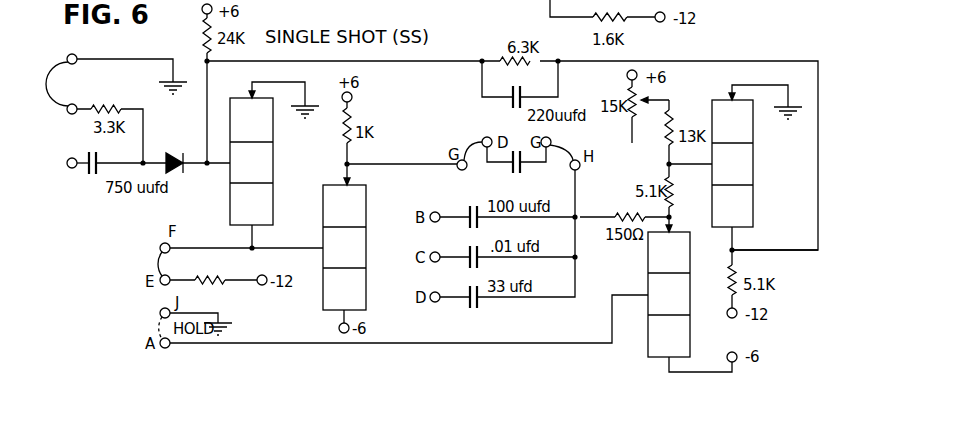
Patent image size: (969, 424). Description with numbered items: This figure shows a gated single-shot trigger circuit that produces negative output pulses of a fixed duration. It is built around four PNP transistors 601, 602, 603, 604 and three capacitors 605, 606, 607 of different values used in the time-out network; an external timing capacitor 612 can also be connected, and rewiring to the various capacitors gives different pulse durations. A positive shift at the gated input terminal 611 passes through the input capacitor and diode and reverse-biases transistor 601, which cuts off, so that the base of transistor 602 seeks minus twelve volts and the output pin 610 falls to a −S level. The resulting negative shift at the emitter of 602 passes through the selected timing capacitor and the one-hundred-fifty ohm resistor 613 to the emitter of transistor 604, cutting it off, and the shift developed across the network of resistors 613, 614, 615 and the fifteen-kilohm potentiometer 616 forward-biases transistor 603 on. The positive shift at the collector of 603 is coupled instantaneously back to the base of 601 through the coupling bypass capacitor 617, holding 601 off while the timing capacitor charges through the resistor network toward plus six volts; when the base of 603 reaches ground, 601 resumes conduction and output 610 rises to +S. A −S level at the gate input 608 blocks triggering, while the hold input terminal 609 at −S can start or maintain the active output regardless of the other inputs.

The PNP transistor 601 is at (274, 152).
The PNP transistor 602 is at (366, 255).
The PNP transistor 603 is at (754, 170).
The PNP transistor 604 is at (647, 260).
The capacitor 605 is at (468, 208).
The capacitor 606 is at (468, 248).
The capacitor 607 is at (468, 290).
The gate input 608 is at (76, 105).
The hold input terminal 609 is at (170, 348).
The output pin 610 is at (161, 246).
The gated input terminal 611 is at (73, 170).
The external timing capacitor 612 is at (523, 172).
The 150 ohm resistor 613 is at (620, 210).
The resistor 614 is at (673, 197).
The resistor 615 is at (672, 125).
The 15K potentiometer 616 is at (630, 95).
The coupling bypass capacitor 617 is at (481, 104).